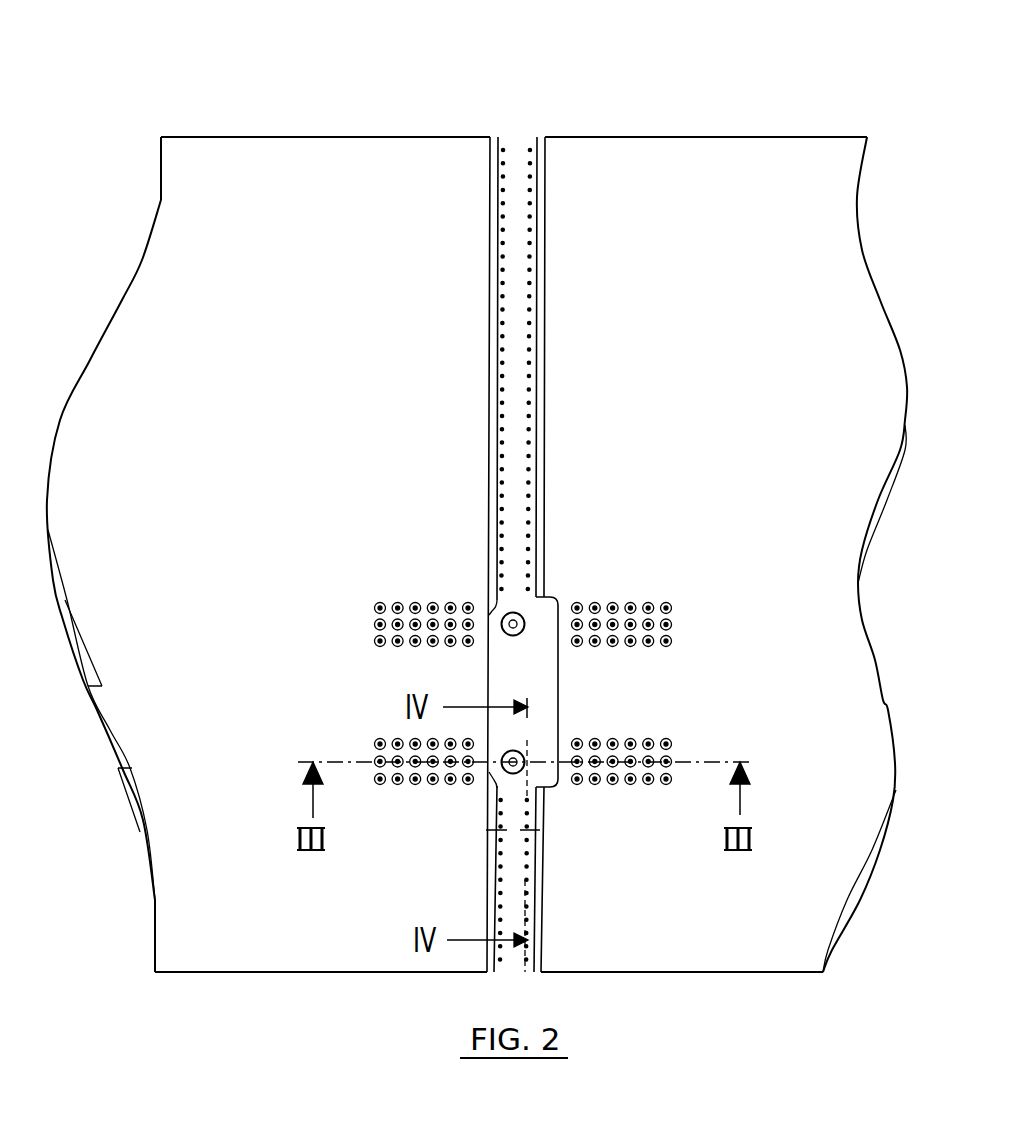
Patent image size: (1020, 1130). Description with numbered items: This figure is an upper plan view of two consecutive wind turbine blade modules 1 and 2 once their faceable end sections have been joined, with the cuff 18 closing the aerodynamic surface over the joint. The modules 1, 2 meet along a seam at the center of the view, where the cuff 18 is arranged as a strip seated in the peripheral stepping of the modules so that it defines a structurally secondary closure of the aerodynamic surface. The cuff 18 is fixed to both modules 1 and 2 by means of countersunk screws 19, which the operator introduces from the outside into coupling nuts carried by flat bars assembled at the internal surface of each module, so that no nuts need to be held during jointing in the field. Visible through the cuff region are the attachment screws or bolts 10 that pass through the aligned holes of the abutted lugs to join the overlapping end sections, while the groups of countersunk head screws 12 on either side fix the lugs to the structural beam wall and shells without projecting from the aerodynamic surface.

The module 1 is at (354, 92).
The module 2 is at (709, 92).
The attachment screw or bolt 10 is at (518, 618).
The countersunk head screws 12 is at (448, 763).
The cuff 18 is at (512, 150).
The countersunk screws 19 is at (532, 227).